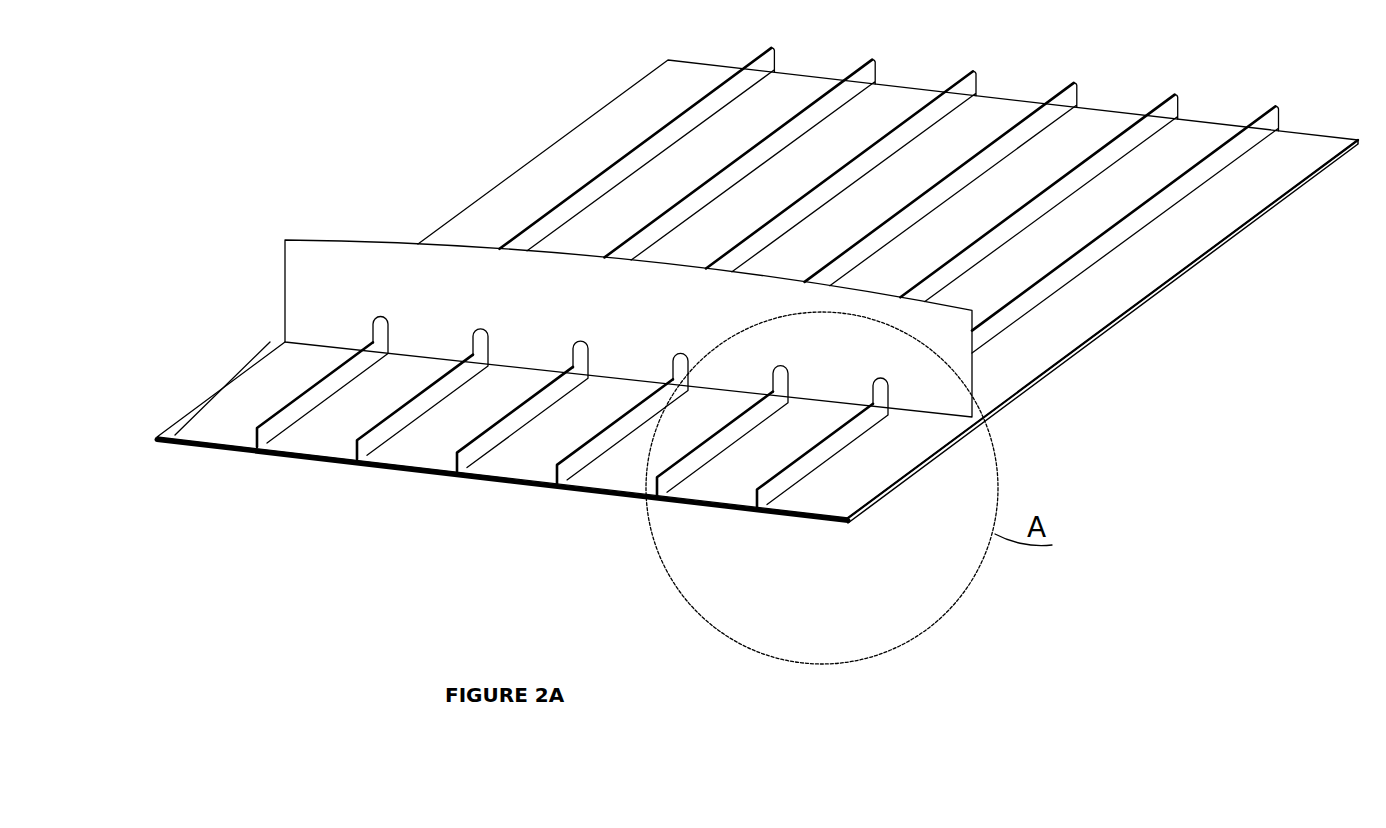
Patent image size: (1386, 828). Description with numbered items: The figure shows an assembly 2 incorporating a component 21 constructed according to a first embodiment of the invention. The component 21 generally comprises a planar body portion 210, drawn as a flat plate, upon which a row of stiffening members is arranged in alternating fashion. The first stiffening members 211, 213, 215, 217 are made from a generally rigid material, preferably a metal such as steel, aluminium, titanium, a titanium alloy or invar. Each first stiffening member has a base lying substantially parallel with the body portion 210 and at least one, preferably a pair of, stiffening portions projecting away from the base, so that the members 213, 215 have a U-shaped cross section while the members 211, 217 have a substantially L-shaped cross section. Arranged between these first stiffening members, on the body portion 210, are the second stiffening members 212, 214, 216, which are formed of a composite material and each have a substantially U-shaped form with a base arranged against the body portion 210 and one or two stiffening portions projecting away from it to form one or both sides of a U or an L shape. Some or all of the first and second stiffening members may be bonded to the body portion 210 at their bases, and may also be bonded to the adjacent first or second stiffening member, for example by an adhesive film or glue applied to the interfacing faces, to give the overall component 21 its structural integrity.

The assembly 2 is at (734, 300).
The component 21 is at (1123, 317).
The planar body portion 210 is at (412, 468).
The first stiffening member 211 is at (213, 433).
The second stiffening member 212 is at (362, 430).
The first stiffening member 213 is at (455, 446).
The second stiffening member 214 is at (558, 453).
The first stiffening member 215 is at (622, 472).
The second stiffening member 216 is at (747, 486).
The first stiffening member 217 is at (864, 490).